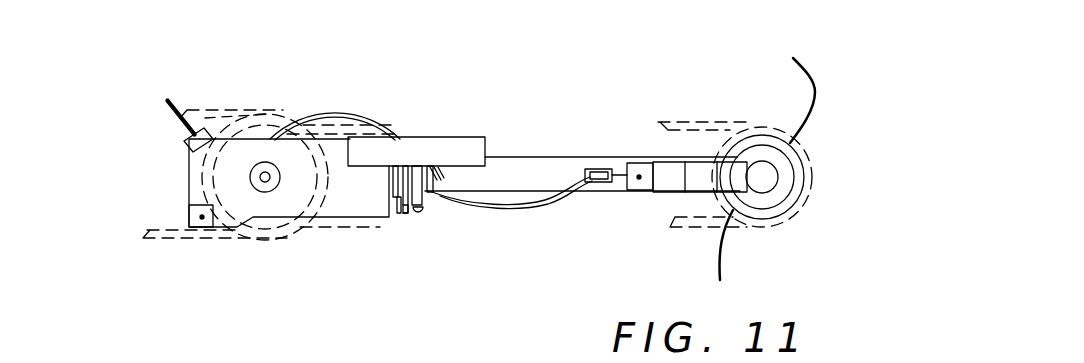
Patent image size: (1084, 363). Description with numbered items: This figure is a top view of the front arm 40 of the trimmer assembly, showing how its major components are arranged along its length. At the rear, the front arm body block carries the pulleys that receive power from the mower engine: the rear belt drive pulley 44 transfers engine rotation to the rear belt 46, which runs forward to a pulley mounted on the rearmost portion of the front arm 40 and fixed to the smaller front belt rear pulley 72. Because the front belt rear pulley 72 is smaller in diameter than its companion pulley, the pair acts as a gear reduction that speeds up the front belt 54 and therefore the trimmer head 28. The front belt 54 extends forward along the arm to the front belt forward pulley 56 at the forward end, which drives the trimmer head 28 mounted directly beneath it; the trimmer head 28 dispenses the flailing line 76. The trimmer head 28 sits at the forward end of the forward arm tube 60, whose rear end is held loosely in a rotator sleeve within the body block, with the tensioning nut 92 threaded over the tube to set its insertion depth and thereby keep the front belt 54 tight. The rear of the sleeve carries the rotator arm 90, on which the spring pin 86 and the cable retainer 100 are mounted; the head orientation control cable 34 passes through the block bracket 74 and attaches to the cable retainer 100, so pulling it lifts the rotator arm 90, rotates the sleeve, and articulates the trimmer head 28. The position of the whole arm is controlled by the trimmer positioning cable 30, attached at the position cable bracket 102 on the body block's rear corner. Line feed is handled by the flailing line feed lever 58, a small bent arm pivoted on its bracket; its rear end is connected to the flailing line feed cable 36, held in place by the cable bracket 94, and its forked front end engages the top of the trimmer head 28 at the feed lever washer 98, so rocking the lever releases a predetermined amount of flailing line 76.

The trimmer head 28 is at (790, 212).
The trimmer positioning cable 30 is at (167, 100).
The head orientation control cable 34 is at (350, 113).
The flailing line feed cable 36 is at (522, 203).
The front arm 40 is at (830, 100).
The rear belt drive pulley 44 is at (273, 110).
The rear belt 46 is at (228, 107).
The front belt 54 is at (387, 127).
The front belt forward pulley 56 is at (813, 152).
The flailing line feed lever 58 is at (672, 180).
The forward arm tube 60 is at (570, 191).
The front belt rear pulley 72 is at (280, 127).
The block bracket 74 is at (440, 143).
The flailing line 76 is at (767, 155).
The spring pin 86 is at (420, 213).
The rotator arm 90 is at (408, 218).
The tensioning nut 92 is at (438, 170).
The cable bracket 94 is at (600, 175).
The feed lever washer 98 is at (762, 168).
The cable retainer 100 is at (397, 215).
The position cable bracket 102 is at (180, 137).